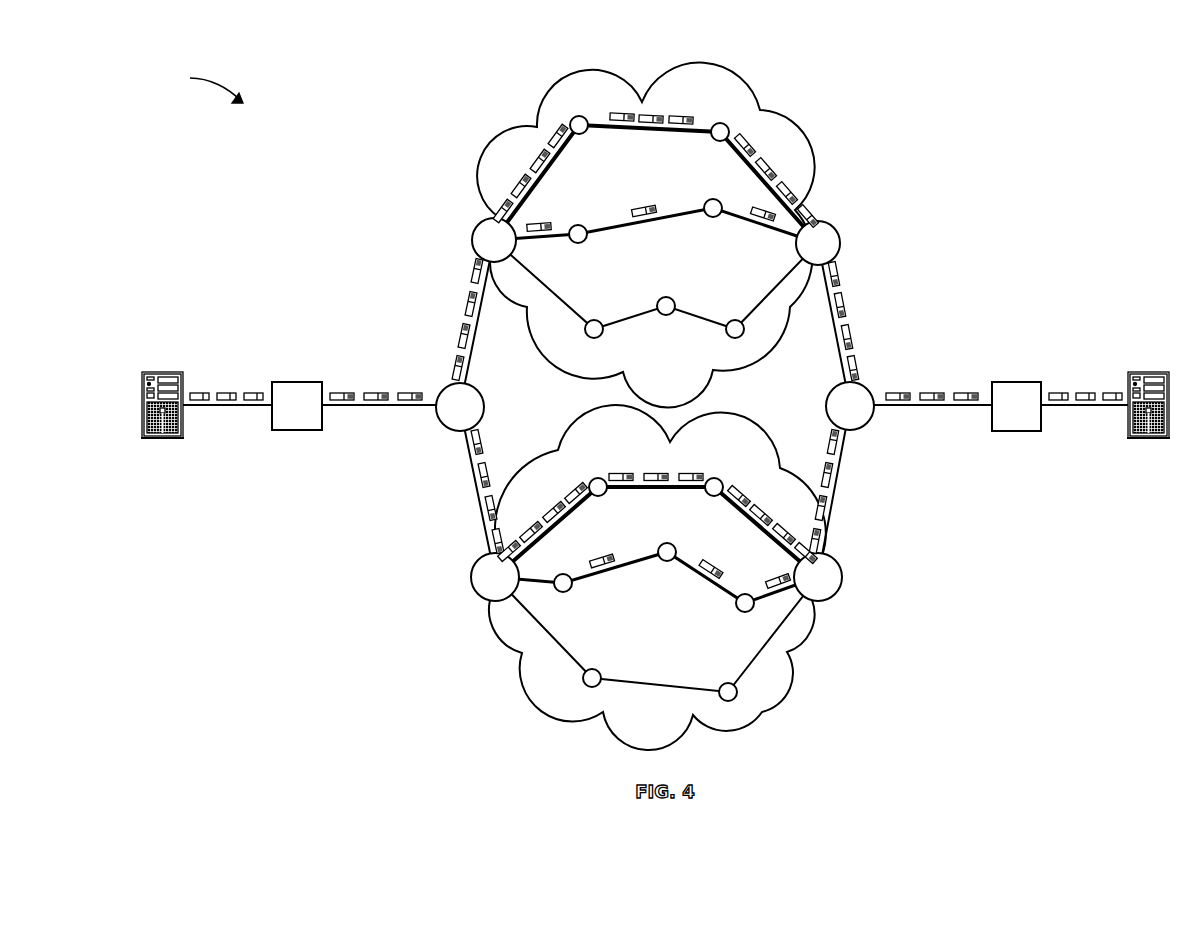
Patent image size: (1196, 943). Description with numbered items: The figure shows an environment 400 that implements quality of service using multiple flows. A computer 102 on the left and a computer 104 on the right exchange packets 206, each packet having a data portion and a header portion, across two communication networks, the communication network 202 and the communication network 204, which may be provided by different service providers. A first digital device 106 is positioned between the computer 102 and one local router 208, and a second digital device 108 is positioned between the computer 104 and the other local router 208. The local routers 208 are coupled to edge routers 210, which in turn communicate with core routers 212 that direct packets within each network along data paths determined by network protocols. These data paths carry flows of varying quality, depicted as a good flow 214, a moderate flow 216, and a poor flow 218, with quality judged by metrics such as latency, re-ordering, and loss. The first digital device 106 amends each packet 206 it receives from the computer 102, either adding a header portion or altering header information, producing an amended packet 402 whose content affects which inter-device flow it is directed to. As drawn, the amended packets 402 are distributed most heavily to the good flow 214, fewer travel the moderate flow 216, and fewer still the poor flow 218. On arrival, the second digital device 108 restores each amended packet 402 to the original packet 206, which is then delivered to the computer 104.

The environment 400 is at (197, 85).
The communication network 202 is at (530, 128).
The communication network 204 is at (540, 703).
The good flow 214 is at (793, 200).
The moderate flow 216 is at (800, 214).
The poor flow 218 is at (788, 642).
The edge router 210 is at (388, 167).
The local router 208 is at (398, 478).
The core router 212 is at (762, 714).
The packet 206 is at (227, 393).
The amended packet 402 is at (415, 393).
The first digital device 106 is at (290, 305).
The second digital device 108 is at (1008, 305).
The computer 102 is at (162, 443).
The computer 104 is at (1148, 443).